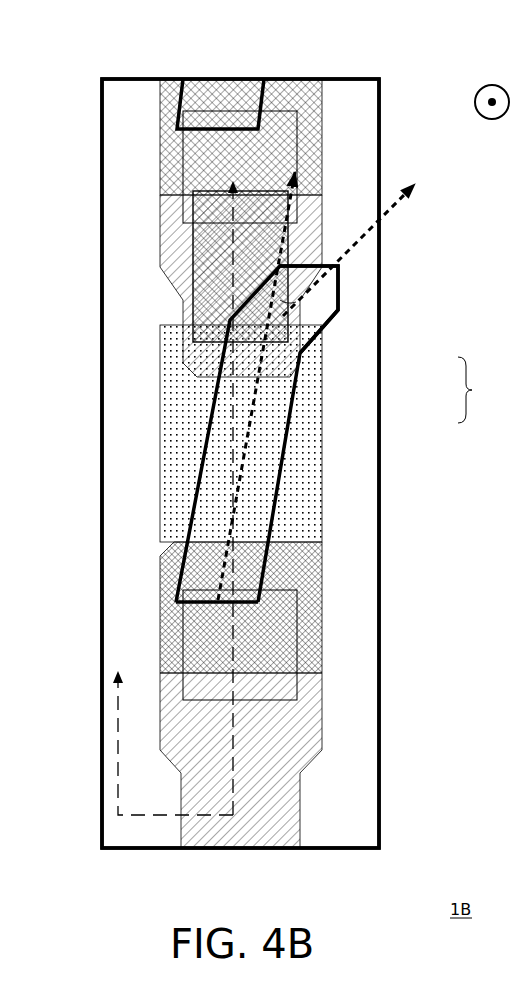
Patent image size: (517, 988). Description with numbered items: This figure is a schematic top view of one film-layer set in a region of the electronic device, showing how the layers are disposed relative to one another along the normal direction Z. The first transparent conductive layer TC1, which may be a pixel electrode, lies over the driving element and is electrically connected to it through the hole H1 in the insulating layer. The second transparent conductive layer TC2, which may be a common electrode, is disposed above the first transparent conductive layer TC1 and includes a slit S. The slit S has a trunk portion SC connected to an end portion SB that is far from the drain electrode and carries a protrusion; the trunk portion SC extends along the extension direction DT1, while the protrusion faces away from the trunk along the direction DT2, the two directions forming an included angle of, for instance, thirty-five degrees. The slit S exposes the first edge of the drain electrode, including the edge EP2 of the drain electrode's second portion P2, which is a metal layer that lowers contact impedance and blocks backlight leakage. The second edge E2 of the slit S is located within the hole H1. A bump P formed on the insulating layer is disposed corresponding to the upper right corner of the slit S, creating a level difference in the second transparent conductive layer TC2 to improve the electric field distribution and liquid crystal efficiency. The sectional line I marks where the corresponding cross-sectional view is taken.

The hole H1 is at (175, 135).
The trunk portion SC is at (272, 92).
The end portion SB is at (345, 306).
The slit S is at (473, 390).
The second portion P2 is at (160, 215).
The bump P is at (193, 262).
The first transparent conductive layer TC1 is at (160, 428).
The second transparent conductive layer TC2 is at (102, 373).
The edge of the second portion EP2 is at (250, 546).
The second edge E2 is at (244, 610).
The sectional line I is at (174, 485).
The extension direction DT1 is at (268, 375).
The direction of the protrusion DT2 is at (362, 238).
The normal direction Z is at (492, 86).